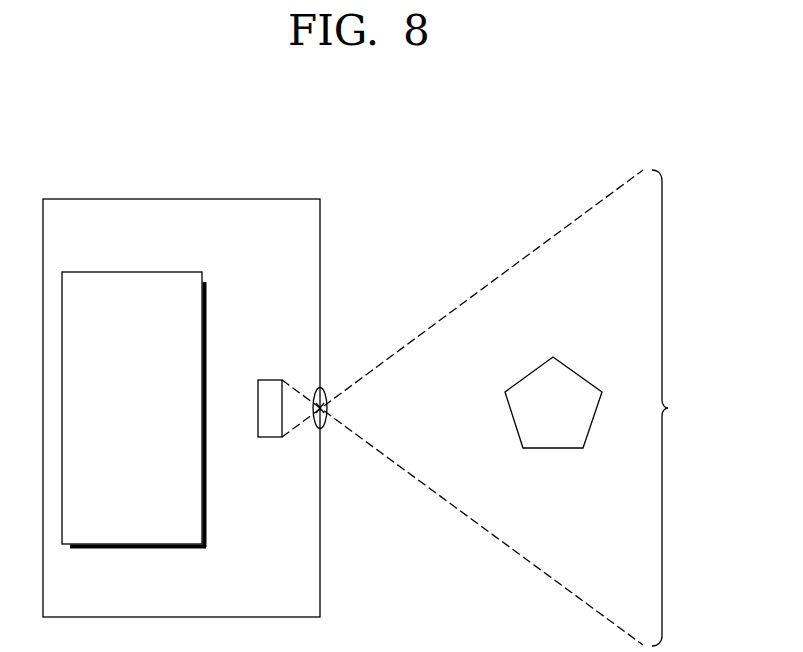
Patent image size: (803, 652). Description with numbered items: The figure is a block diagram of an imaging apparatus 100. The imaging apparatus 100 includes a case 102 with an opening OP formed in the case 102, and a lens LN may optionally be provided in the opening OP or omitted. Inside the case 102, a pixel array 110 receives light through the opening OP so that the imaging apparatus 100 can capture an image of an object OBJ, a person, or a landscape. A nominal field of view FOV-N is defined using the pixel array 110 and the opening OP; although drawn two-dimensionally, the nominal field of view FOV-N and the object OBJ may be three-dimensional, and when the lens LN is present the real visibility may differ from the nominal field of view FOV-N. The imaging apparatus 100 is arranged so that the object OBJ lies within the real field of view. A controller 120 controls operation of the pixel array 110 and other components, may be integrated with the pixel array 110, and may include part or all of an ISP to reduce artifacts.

The imaging apparatus 100 is at (569, 118).
The case 102 is at (277, 199).
The pixel array 110 is at (271, 390).
The controller 120 is at (158, 272).
The lens LN is at (327, 418).
The opening OP is at (327, 383).
The object OBJ is at (572, 415).
The nominal field of view FOV-N is at (693, 408).